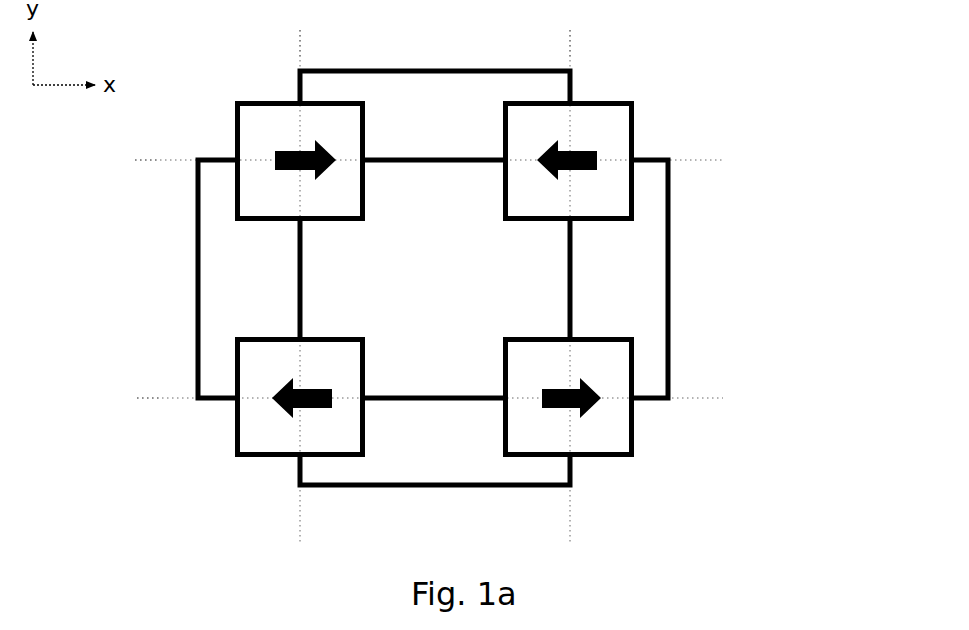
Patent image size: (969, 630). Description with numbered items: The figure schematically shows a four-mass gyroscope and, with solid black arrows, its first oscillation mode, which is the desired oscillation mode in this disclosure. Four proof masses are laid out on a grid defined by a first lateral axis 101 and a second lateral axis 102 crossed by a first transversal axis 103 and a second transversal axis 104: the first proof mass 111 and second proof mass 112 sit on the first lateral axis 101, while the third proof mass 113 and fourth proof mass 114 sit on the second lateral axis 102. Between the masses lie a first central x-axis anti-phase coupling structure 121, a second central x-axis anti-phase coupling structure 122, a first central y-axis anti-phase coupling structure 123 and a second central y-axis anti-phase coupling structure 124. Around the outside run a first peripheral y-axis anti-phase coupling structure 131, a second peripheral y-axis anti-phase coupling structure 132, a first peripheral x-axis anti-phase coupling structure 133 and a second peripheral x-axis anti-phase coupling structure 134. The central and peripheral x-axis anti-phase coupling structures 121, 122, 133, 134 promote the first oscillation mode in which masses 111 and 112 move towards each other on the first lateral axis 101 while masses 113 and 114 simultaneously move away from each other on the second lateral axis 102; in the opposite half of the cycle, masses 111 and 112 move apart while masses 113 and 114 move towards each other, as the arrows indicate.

The first lateral axis 101 is at (128, 159).
The second lateral axis 102 is at (130, 395).
The first transversal axis 103 is at (308, 31).
The second transversal axis 104 is at (574, 32).
The first proof mass 111 is at (300, 161).
The second proof mass 112 is at (569, 161).
The third proof mass 113 is at (300, 397).
The fourth proof mass 114 is at (569, 397).
The first central x-axis anti-phase coupling structure 121 is at (417, 169).
The second central x-axis anti-phase coupling structure 122 is at (421, 392).
The first central y-axis anti-phase coupling structure 123 is at (306, 284).
The second central y-axis anti-phase coupling structure 124 is at (562, 284).
The first peripheral y-axis anti-phase coupling structure 131 is at (418, 78).
The second peripheral y-axis anti-phase coupling structure 132 is at (422, 480).
The first peripheral x-axis anti-phase coupling structure 133 is at (203, 285).
The second peripheral x-axis anti-phase coupling structure 134 is at (660, 287).